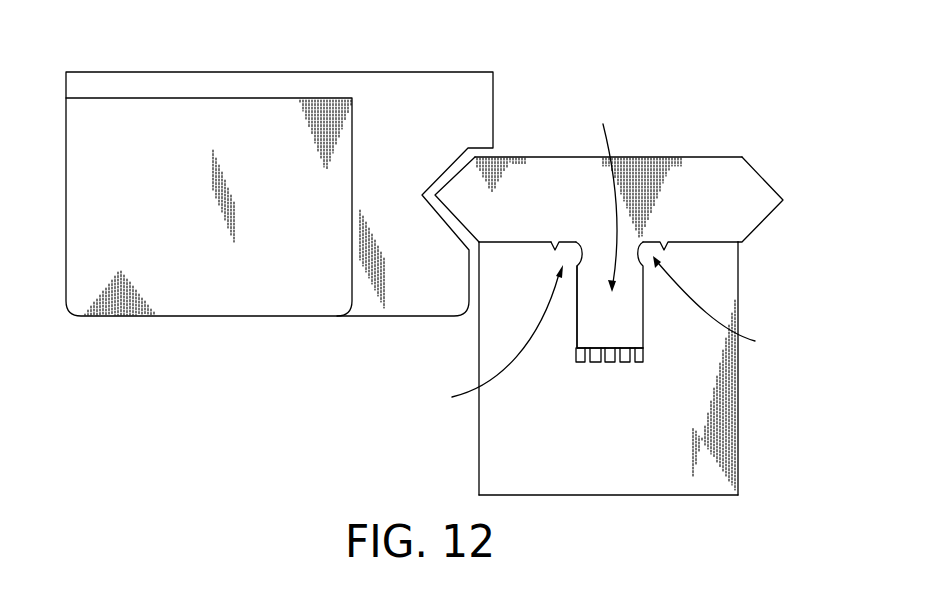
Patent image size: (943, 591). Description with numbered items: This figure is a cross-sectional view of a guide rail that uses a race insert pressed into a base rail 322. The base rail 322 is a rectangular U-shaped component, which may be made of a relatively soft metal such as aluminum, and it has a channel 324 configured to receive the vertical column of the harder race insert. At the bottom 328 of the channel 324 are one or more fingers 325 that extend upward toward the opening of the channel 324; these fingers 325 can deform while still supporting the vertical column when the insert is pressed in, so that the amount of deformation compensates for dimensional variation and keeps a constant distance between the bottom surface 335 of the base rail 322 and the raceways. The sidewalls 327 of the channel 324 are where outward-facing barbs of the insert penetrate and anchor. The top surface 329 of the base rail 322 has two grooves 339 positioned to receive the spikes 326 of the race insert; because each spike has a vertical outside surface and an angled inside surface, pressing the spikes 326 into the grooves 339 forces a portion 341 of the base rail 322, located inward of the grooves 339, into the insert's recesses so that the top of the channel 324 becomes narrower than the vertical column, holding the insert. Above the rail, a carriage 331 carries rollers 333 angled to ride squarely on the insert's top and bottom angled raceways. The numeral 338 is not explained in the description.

The carriage 331 is at (253, 72).
The rollers 333 is at (452, 178).
The top surface of head 338 is at (672, 157).
The top surface of the base rail 329 is at (712, 241).
The base rail 322 is at (740, 470).
The bottom surface of the base rail 335 is at (658, 495).
The spikes 326 is at (552, 246).
The grooves 339 is at (553, 253).
The portion of the base rail 341 is at (602, 334).
The channel 324 is at (609, 224).
The sidewalls of the channel 327 is at (575, 336).
The fingers 325 is at (645, 351).
The bottom of the channel 328 is at (578, 363).